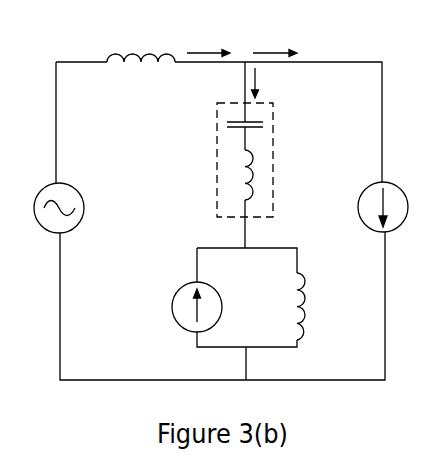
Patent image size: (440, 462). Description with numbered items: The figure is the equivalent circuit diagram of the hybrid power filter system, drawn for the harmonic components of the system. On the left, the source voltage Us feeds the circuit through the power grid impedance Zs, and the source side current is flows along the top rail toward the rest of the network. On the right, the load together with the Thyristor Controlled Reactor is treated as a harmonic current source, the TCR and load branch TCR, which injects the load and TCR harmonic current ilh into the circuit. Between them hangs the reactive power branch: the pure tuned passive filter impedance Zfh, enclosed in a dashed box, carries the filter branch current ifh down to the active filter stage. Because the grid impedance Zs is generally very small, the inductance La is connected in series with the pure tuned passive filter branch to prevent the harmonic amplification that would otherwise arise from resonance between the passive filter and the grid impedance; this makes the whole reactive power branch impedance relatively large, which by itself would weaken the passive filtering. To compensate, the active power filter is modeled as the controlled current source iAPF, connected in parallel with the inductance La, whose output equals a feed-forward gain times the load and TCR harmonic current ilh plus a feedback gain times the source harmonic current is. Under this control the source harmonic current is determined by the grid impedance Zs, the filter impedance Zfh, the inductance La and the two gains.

The power grid impedance Zs is at (141, 40).
The source side current is is at (208, 39).
The load and TCR harmonic current ilh is at (275, 37).
The passive filter branch current ifh is at (276, 86).
The passive filter impedance Zfh is at (228, 160).
The source voltage Us is at (48, 192).
The Thyristor Controlled Reactor and load TCR is at (360, 196).
The controlled current source iAPF is at (178, 306).
The inductance La is at (319, 306).